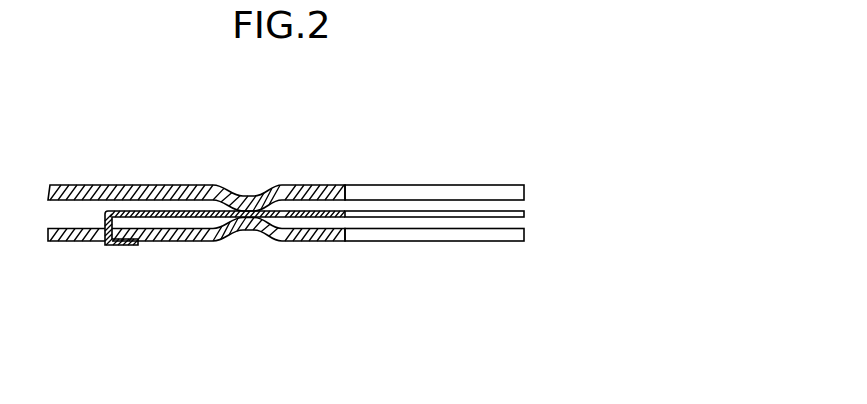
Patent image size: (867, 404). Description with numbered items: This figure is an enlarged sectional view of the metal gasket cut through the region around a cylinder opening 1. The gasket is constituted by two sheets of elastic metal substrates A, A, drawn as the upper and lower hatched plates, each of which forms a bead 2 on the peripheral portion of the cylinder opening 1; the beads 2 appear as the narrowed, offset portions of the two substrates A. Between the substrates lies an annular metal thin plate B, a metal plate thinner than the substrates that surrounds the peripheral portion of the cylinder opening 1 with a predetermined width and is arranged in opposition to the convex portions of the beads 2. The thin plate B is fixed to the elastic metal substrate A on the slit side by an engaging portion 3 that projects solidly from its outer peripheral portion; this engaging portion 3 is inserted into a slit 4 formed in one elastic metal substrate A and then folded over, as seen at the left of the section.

The cylinder opening 1 is at (525, 237).
The bead 2 is at (259, 184).
The engaging portion 3 is at (125, 247).
The slit 4 is at (97, 243).
The elastic metal substrate A is at (120, 176).
The annular metal thin plate B is at (312, 197).